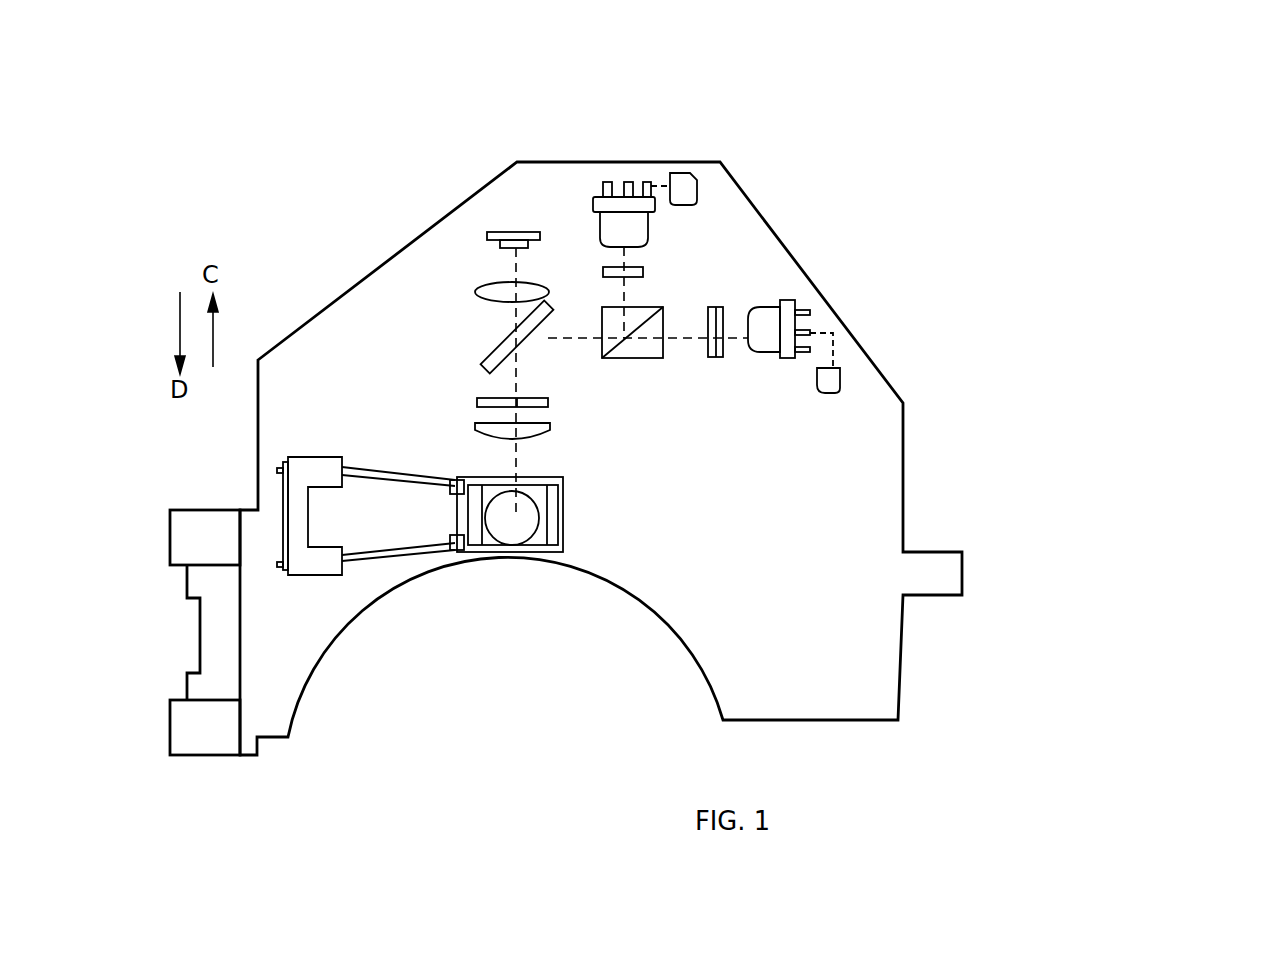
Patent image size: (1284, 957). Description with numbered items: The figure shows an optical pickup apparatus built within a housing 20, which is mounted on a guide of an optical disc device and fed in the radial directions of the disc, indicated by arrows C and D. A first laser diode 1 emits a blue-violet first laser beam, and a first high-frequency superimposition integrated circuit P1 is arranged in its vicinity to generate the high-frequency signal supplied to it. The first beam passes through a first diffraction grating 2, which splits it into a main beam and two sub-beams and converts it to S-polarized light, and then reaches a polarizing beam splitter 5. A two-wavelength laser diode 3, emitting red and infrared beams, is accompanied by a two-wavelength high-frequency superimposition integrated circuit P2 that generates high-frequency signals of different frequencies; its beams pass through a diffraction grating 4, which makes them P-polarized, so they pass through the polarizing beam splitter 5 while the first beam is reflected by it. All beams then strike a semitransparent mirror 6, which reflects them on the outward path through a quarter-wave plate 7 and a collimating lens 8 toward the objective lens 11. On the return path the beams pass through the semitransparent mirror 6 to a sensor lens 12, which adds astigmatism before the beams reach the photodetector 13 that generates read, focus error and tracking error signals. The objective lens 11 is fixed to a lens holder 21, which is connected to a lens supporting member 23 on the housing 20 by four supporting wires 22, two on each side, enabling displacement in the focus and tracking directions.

The first laser diode 1 is at (620, 170).
The first high-frequency superimposition integrated circuit P1 is at (688, 174).
The first diffraction grating 2 is at (645, 272).
The two-wavelength laser diode 3 is at (770, 343).
The two-wavelength high-frequency superimposition integrated circuit P2 is at (840, 380).
The diffraction grating 4 is at (712, 357).
The polarizing beam splitter 5 is at (638, 348).
The semitransparent mirror 6 is at (488, 357).
The quarter-wave plate 7 is at (547, 402).
The collimating lens 8 is at (537, 432).
The objective lens 11 is at (510, 535).
The sensor lens 12 is at (475, 292).
The photodetector 13 is at (493, 232).
The housing 20 is at (890, 500).
The lens holder 21 is at (538, 497).
The supporting wires 22 is at (382, 473).
The lens supporting member 23 is at (313, 567).